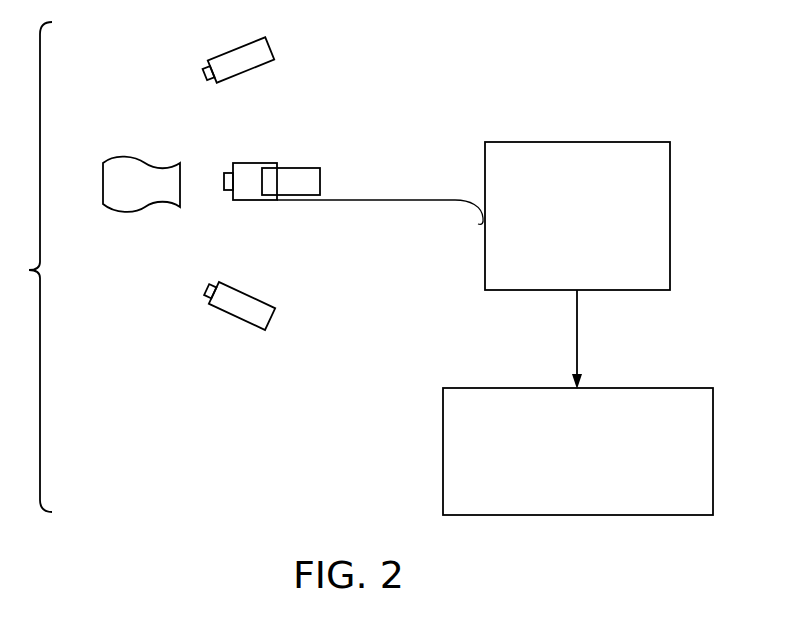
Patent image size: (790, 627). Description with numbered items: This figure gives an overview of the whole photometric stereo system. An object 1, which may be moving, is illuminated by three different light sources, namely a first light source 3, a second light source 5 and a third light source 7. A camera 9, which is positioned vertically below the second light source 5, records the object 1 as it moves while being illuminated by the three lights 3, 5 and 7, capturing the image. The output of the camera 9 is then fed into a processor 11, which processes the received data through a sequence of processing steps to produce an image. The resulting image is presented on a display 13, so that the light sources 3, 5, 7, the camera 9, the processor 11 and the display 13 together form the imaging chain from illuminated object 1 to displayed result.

The object 1 is at (103, 182).
The first light source 3 is at (263, 46).
The second light source 5 is at (300, 168).
The third light source 7 is at (270, 318).
The camera 9 is at (253, 163).
The processor 11 is at (628, 142).
The display 13 is at (443, 467).